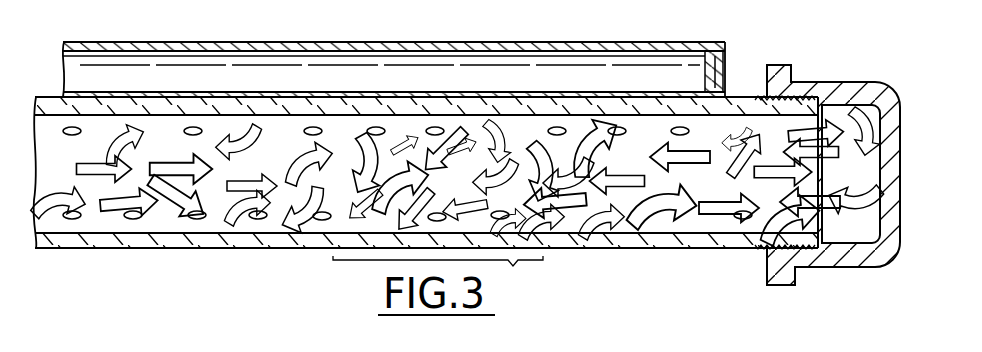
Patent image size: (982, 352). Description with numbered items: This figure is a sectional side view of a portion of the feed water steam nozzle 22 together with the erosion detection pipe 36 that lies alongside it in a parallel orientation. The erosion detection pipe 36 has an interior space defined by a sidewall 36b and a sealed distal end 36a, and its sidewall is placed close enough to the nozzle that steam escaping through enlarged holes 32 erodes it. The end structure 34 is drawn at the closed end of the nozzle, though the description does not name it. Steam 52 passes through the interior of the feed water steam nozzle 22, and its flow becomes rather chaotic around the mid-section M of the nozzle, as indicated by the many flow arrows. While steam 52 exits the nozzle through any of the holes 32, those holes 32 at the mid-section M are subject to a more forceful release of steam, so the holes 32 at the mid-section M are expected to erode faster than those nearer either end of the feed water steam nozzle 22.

The feed water steam nozzle 22 is at (612, 250).
The holes 32 is at (192, 128).
The end cap 34 is at (806, 100).
The erosion detection pipe 36 is at (538, 51).
The sealed distal end 36a is at (742, 27).
The sidewall 36b is at (470, 51).
The steam 52 is at (128, 196).
The mid-section M is at (512, 272).